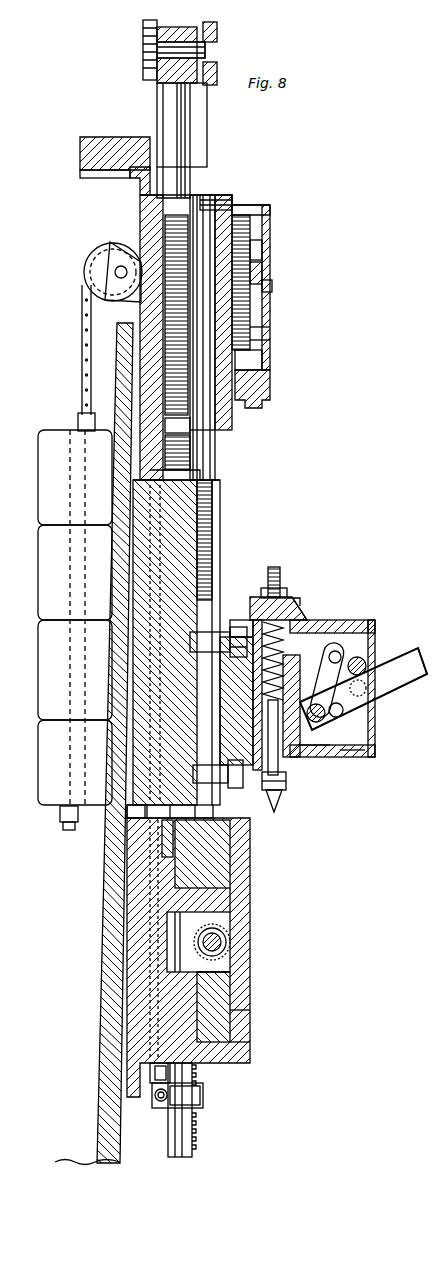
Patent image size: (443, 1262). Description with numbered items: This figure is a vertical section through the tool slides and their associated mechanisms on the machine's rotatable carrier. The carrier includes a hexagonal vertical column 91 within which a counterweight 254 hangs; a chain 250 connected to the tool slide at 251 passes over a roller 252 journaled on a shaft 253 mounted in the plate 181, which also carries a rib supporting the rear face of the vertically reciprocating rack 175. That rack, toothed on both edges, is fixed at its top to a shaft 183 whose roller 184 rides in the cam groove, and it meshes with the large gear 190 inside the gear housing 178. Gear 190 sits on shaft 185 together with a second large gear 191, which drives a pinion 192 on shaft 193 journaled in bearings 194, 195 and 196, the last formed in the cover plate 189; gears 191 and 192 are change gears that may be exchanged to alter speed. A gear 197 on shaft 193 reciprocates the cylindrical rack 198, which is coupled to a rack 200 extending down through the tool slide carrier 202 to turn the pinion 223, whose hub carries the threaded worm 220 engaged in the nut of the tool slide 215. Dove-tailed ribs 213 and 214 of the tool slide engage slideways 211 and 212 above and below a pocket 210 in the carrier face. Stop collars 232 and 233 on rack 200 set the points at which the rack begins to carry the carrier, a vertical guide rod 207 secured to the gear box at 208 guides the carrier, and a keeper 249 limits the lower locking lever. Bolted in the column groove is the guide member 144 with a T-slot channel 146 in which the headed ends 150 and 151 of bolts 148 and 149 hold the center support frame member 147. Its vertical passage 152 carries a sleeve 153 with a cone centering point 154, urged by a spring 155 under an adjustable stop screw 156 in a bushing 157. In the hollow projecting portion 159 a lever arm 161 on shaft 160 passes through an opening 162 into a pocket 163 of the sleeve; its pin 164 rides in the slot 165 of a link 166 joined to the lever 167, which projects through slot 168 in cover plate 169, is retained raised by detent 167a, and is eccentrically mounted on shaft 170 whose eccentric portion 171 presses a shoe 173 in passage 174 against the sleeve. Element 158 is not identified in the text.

The roller 184 is at (143, 62).
The shaft 183 is at (180, 142).
The large gear 190 is at (215, 198).
The gear housing 178 is at (255, 205).
The shaft 253 is at (115, 248).
The roller 252 is at (92, 256).
The plate 181 is at (115, 272).
The bearing 194 is at (170, 330).
The chain 250 is at (82, 355).
The vertical column 91 is at (120, 380).
The counterweight 254 is at (50, 435).
The large gear 191 is at (250, 240).
The shaft 185 is at (262, 258).
The cover plate 189 is at (262, 272).
The bearing 195 is at (260, 288).
The pinion 192 is at (270, 305).
The bearing 196 is at (270, 327).
The shaft 193 is at (270, 340).
The gear 197 is at (262, 390).
The attachment point of guide rod 208 is at (203, 430).
The vertical guide rod 207 is at (188, 438).
The vertical cylindrical rack 198 is at (188, 452).
The vertically reciprocating rack 175 is at (198, 468).
The vertical guide member 144 is at (205, 510).
The T-slot channel 146 is at (220, 513).
The headed end of bolt 150 is at (215, 632).
The center support frame member 147 is at (258, 620).
The bolt 148 is at (238, 625).
The bushing 157 is at (280, 580).
The vertical passage 152 is at (287, 592).
The stop 158 is at (298, 600).
The adjustable stop screw 156 is at (305, 612).
The pocket 163 is at (290, 612).
The spring 155 is at (340, 625).
The lever arm 161 is at (370, 625).
The shaft 160 is at (362, 658).
The cover plate 169 is at (366, 683).
The slot 168 is at (345, 670).
The slot 165 is at (285, 662).
The opening 162 is at (300, 684).
The pin 164 is at (400, 680).
The lever 167 is at (395, 690).
The spring pressed detent 167a is at (372, 706).
The link 166 is at (375, 730).
The shoe 173 is at (316, 722).
The passage 174 is at (280, 760).
The hollow projecting portion 159 is at (350, 757).
The sleeve 153 is at (286, 783).
The eccentric bearing portion 171 is at (325, 760).
The shaft 170 is at (360, 760).
The cone centering point 154 is at (278, 800).
The headed end of bolt 151 is at (235, 790).
The bolt 149 is at (228, 790).
The stop collar 232 is at (213, 811).
The chain connection point 251 is at (138, 818).
The rack 200 is at (130, 882).
The dove-tailed rib 213 is at (215, 878).
The dove-tailed slideway 211 is at (245, 900).
The pocket 210 is at (235, 925).
The pinion 223 is at (230, 935).
The threaded worm 220 is at (228, 946).
The tool slide 215 is at (232, 970).
The tool slide carrier 202 is at (215, 990).
The dove-tailed rib 214 is at (242, 1012).
The dove-tailed slideway 212 is at (240, 1035).
The stop collar 233 is at (203, 1093).
The keeper 249 is at (158, 1083).